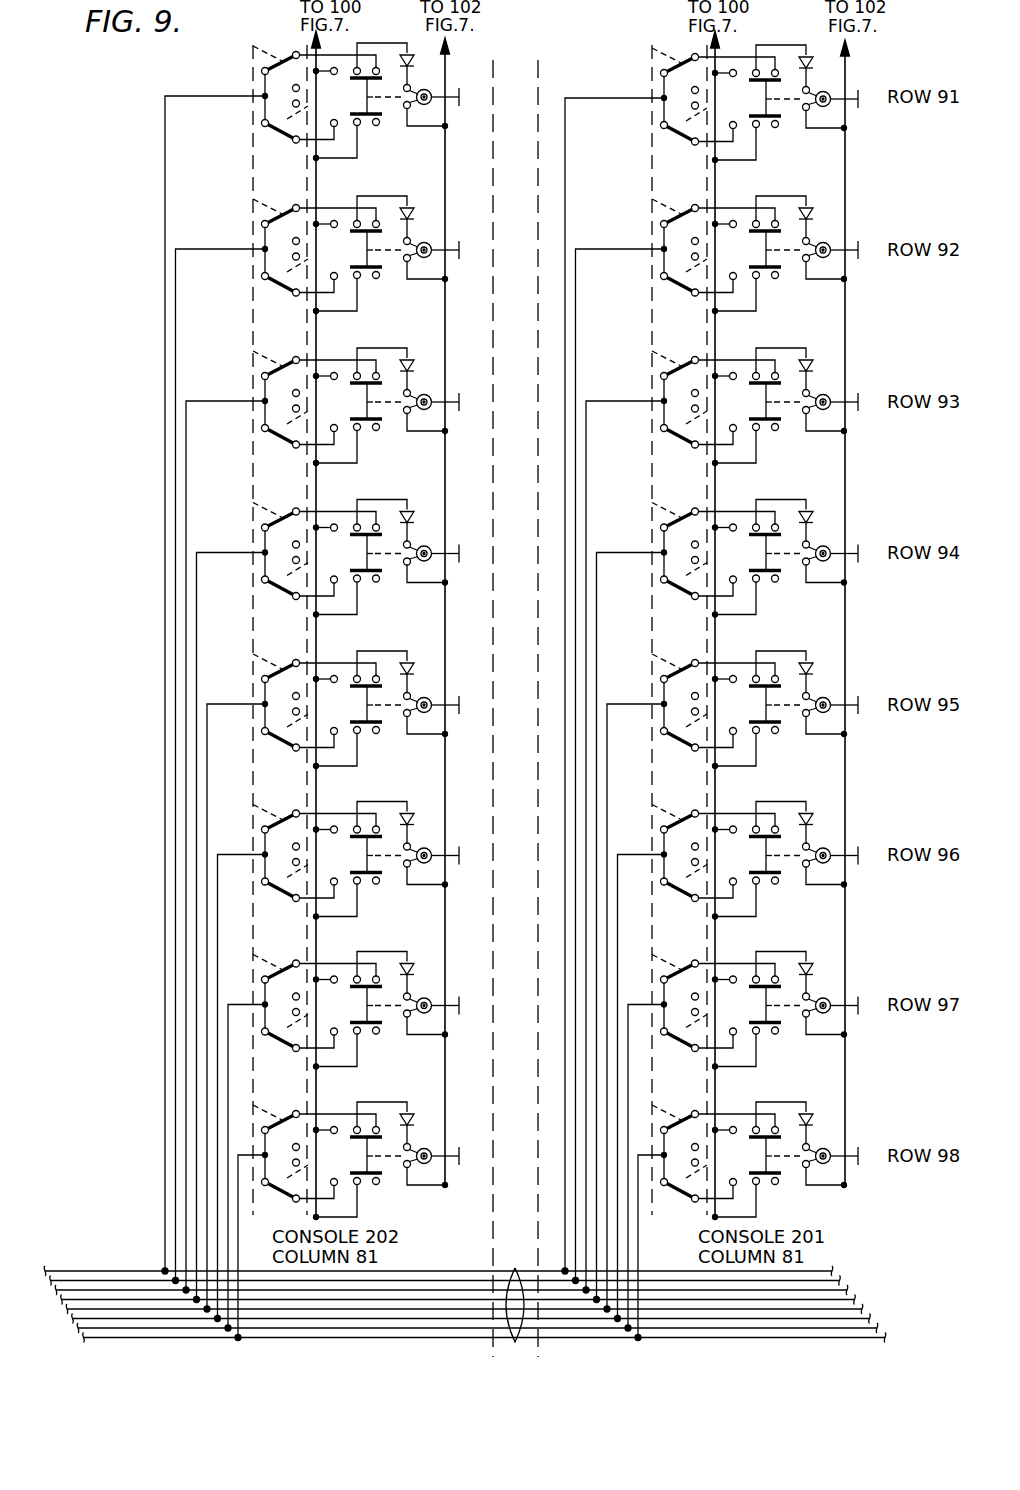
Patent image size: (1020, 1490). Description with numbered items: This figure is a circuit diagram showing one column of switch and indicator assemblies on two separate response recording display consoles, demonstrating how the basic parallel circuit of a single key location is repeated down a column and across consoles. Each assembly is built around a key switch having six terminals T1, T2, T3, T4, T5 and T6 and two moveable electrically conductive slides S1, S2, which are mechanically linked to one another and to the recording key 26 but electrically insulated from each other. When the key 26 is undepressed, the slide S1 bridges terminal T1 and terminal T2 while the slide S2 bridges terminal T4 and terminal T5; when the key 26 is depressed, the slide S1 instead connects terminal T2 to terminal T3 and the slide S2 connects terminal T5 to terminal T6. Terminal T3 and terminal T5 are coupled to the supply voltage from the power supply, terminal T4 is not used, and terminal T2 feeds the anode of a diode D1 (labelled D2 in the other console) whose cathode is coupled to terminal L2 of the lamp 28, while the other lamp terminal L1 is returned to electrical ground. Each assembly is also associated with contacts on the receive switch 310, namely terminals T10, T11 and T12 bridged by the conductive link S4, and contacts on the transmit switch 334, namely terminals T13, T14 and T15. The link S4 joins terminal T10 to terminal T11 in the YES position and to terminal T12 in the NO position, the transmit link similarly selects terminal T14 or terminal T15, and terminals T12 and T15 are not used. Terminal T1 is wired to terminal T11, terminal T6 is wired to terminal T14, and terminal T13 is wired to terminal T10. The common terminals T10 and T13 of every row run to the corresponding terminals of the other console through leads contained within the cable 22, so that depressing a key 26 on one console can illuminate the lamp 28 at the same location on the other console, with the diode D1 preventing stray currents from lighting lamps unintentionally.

The electrically conductive link S4 is at (254, 80).
The terminal T10 is at (236, 64).
The terminal T11 is at (283, 39).
The terminal T12 is at (292, 80).
The terminal T13 is at (236, 130).
The terminal T14 is at (298, 149).
The terminal T15 is at (252, 109).
The terminal T1 is at (385, 48).
The terminal T2 is at (376, 37).
The terminal T3 is at (328, 56).
The terminal T4 is at (389, 141).
The terminal T5 is at (370, 152).
The terminal T6 is at (334, 141).
The electrically conductive slide S1 is at (354, 71).
The electrically conductive slide S2 is at (348, 130).
The diode D1 is at (819, 62).
The diode D2 is at (418, 59).
The terminal L1 is at (420, 82).
The terminal L2 is at (426, 114).
The lamp 28 is at (422, 87).
The response recording key 26 is at (456, 112).
The receive switch 310 is at (250, 630).
The transmit switch 334 is at (280, 120).
The electrical cable 22 is at (517, 1341).